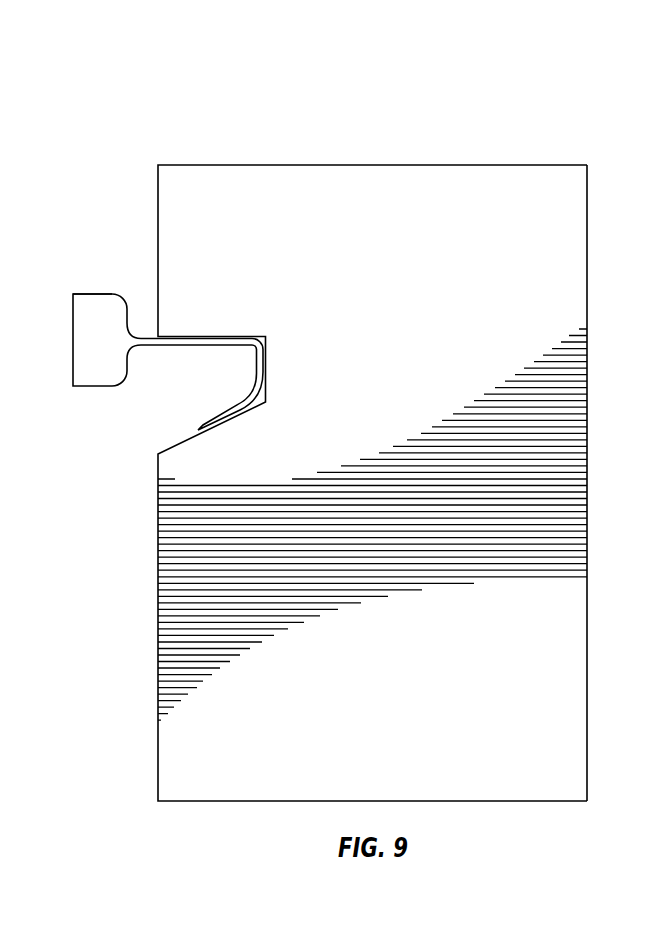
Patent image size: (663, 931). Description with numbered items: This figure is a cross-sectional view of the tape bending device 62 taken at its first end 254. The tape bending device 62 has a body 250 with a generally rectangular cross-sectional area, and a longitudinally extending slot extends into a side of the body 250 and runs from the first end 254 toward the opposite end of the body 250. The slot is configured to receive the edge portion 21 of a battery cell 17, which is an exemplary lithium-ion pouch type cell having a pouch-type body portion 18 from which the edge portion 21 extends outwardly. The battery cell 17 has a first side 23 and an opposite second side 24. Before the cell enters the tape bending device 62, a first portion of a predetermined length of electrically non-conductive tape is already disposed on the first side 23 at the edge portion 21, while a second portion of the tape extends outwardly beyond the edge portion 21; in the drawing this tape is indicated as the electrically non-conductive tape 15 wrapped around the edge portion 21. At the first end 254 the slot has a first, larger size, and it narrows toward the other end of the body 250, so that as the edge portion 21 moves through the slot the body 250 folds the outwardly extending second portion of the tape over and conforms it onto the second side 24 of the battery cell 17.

The tape bending device 62 is at (376, 126).
The body 250 is at (448, 164).
The first end 254 is at (589, 747).
The battery cell 17 is at (85, 287).
The pouch-type body portion 18 is at (110, 292).
The first side 23 is at (145, 335).
The edge portion 21 is at (203, 344).
The second side 24 is at (147, 347).
The electrically non-conductive tape 15 is at (256, 391).